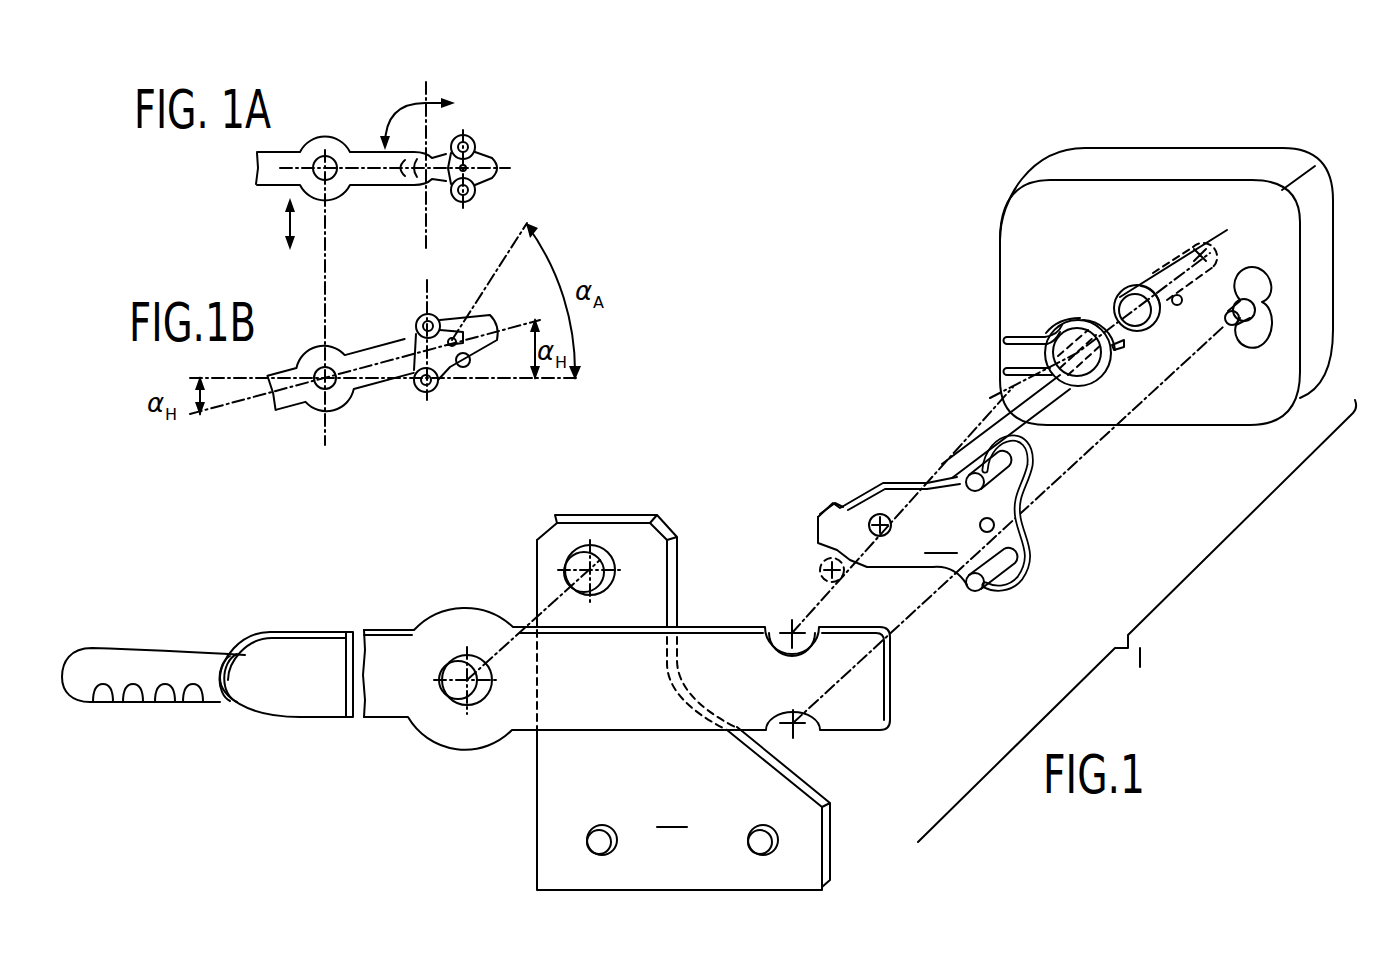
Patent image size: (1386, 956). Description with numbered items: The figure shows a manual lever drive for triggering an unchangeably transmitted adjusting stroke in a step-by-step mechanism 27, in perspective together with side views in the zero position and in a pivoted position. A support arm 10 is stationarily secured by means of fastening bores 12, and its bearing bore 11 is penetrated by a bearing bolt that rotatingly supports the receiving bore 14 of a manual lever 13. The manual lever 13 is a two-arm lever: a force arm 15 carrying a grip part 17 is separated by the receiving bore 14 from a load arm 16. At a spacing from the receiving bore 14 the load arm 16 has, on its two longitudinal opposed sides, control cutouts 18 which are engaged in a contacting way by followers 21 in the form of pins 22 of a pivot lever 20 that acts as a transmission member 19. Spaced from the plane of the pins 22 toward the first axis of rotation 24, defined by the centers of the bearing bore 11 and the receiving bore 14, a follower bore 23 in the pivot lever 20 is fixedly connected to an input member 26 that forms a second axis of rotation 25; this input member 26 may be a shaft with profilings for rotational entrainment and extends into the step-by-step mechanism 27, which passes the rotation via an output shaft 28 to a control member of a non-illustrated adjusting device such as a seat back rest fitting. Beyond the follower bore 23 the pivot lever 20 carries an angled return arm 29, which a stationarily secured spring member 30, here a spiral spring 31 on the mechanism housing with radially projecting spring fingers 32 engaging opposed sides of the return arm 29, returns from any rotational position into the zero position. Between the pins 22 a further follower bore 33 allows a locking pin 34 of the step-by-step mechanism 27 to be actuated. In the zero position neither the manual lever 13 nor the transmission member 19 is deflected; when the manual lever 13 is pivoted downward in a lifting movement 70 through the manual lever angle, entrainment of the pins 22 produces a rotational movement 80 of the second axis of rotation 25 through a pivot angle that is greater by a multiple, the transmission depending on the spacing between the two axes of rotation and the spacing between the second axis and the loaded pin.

In FIG. 1, the support arm 10 is at (683, 702).
In FIG. 1, the bearing bore 11 is at (586, 560).
In FIG. 1, the fastening bores 12 is at (588, 843).
In FIG. 1A, the manual lever 13 is at (277, 187).
In FIG. 1B, the manual lever 13 is at (283, 412).
In FIG. 1, the manual lever 13 is at (322, 718).
In FIG. 1, the receiving bore 14 is at (482, 692).
In FIG. 1, the force arm 15 is at (313, 660).
In FIG. 1A, the load arm 16 is at (370, 160).
In FIG. 1B, the load arm 16 is at (366, 350).
In FIG. 1, the load arm 16 is at (627, 702).
In FIG. 1, the grip part 17 is at (122, 665).
In FIG. 1, the control cutouts 18 is at (785, 632).
In FIG. 1, the transmission member 19 is at (855, 481).
In FIG. 1A, the pivot lever 20 is at (456, 138).
In FIG. 1B, the pivot lever 20 is at (460, 390).
In FIG. 1, the pivot lever 20 is at (892, 531).
In FIG. 1, the followers 21 is at (1024, 545).
In FIG. 1A, the pins 22 is at (482, 144).
In FIG. 1B, the pins 22 is at (433, 322).
In FIG. 1, the pins 22 is at (985, 460).
In FIG. 1, the follower bore 23 is at (884, 537).
In FIG. 1A, the first axis of rotation 24 is at (323, 158).
In FIG. 1B, the first axis of rotation 24 is at (318, 392).
In FIG. 1, the first axis of rotation 24 is at (545, 600).
In FIG. 1A, the second axis of rotation 25 is at (438, 153).
In FIG. 1B, the second axis of rotation 25 is at (420, 400).
In FIG. 1, the second axis of rotation 25 is at (950, 463).
In FIG. 1, the input member 26 is at (987, 417).
In FIG. 1, the step-by-step mechanism 27 is at (1022, 168).
In FIG. 1, the output shaft 28 is at (1196, 240).
In FIG. 1, the return arm 29 is at (832, 507).
In FIG. 1, the spring member 30 is at (1056, 312).
In FIG. 1, the spiral spring 31 is at (1085, 320).
In FIG. 1, the spring fingers 32 is at (1013, 370).
In FIG. 1, the follower bore 33 is at (982, 521).
In FIG. 1, the locking pin 34 is at (1247, 340).
In FIG. 1A, the lifting movement 70 is at (292, 248).
In FIG. 1A, the rotational movement 80 is at (415, 103).